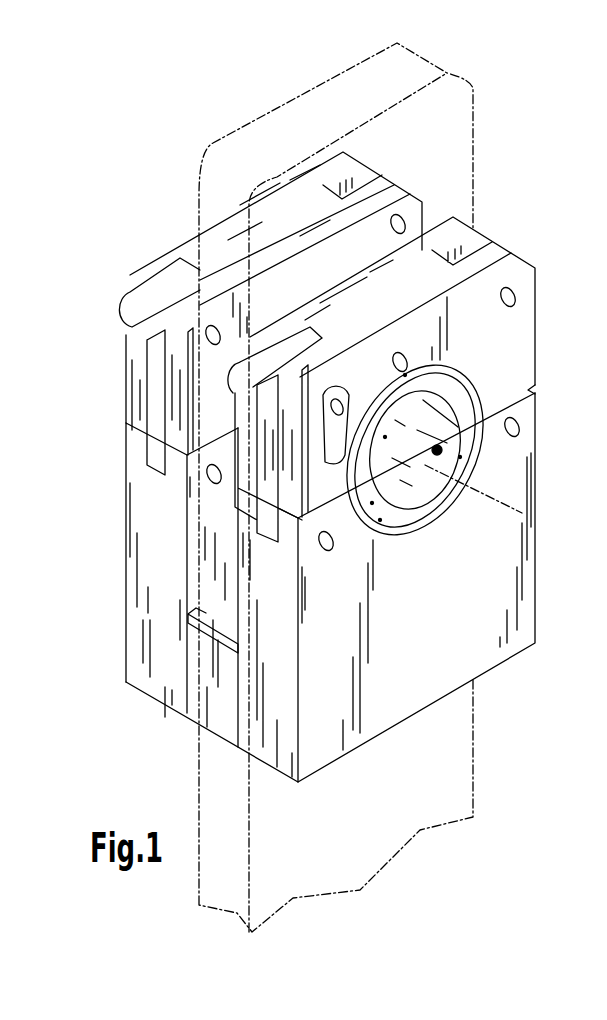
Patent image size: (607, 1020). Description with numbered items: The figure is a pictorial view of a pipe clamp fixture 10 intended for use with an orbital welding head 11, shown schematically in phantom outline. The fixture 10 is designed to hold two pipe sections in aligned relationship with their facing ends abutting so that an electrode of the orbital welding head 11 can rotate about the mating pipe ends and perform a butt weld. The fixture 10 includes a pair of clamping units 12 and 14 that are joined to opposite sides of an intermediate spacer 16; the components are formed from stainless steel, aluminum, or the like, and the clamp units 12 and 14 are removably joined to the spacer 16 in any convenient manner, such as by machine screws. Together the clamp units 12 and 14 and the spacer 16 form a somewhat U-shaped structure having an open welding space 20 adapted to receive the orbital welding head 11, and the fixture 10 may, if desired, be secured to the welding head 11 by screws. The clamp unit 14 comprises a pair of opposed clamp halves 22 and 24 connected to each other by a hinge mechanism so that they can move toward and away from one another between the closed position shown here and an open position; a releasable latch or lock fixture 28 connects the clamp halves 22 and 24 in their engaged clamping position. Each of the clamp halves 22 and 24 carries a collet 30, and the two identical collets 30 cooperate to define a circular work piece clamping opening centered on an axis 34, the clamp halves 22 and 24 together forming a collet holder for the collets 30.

The pipe clamp fixture 10 is at (493, 698).
The orbital welding head 11 is at (462, 78).
The clamping unit 12 is at (145, 692).
The clamping unit 14 is at (293, 777).
The intermediate spacer 16 is at (207, 712).
The open welding space 20 is at (377, 230).
The clamp half 22 is at (537, 268).
The clamp half 24 is at (519, 479).
The releasable latch 28 is at (343, 378).
The collet 30 is at (450, 405).
The axis 34 is at (497, 497).